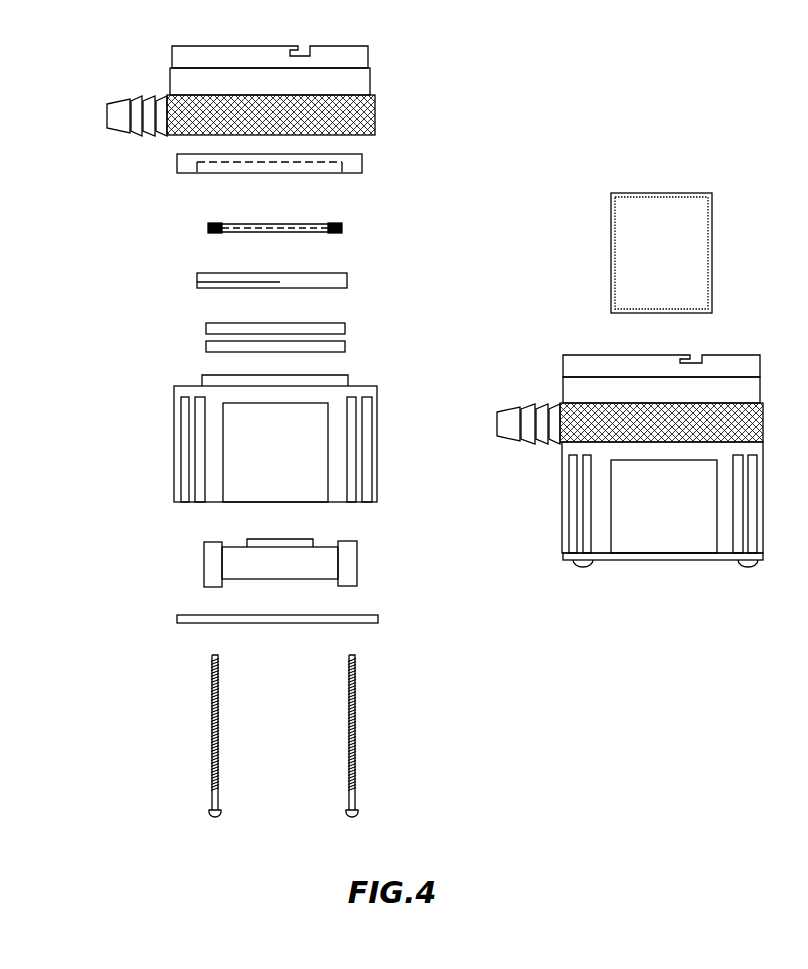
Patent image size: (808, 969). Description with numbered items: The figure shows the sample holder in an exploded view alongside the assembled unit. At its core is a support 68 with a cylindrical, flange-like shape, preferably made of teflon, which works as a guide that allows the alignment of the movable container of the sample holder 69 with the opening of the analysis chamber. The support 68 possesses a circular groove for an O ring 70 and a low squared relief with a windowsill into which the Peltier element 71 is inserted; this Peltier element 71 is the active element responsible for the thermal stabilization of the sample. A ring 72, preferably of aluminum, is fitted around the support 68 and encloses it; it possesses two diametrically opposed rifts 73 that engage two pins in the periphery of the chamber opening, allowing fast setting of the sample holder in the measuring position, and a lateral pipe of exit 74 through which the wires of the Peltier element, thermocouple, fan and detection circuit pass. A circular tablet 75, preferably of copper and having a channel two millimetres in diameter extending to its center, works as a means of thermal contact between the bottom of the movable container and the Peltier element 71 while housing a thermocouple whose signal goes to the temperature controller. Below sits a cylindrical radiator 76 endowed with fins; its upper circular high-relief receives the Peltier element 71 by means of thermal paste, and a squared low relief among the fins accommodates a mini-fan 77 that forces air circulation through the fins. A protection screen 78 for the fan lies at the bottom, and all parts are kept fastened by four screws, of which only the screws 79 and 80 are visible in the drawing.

The support 68 is at (186, 181).
The movable container of the sample holder 69 is at (714, 262).
The O ring 70 is at (333, 237).
The Peltier element 71 is at (353, 334).
The ring 72 is at (382, 103).
The rifts 73 is at (297, 42).
The lateral pipe of exit 74 is at (78, 106).
The circular tablet 75 is at (209, 291).
The cylindrical radiator 76 is at (168, 447).
The mini-fan 77 is at (363, 558).
The protection screen 78 is at (181, 601).
The screw 79 is at (227, 727).
The screw 80 is at (344, 764).